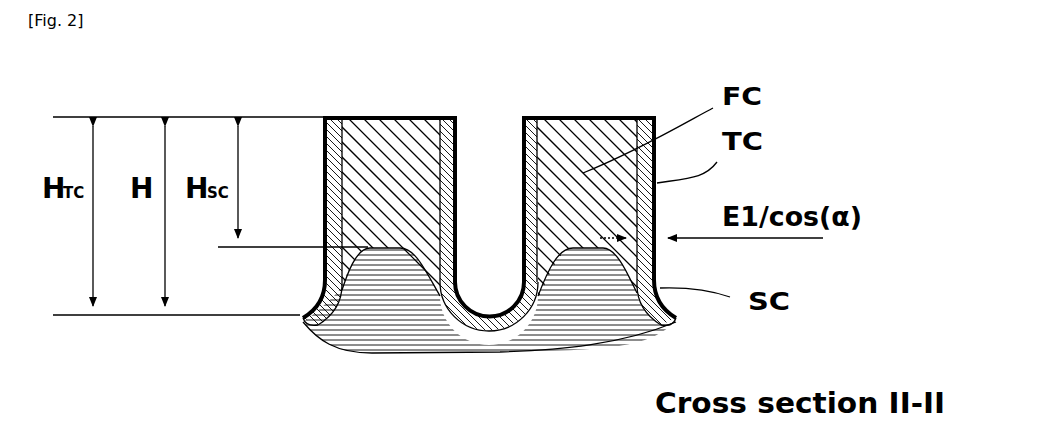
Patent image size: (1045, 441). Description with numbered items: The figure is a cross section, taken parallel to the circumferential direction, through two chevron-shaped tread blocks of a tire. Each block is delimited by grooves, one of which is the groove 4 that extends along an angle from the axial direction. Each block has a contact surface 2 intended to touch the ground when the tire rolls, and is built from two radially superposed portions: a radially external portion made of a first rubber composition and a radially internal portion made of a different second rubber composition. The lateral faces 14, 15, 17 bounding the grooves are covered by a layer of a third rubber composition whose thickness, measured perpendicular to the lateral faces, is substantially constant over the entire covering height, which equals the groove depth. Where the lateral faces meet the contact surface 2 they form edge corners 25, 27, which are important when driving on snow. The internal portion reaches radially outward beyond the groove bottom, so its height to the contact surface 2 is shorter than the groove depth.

The contact surface 2 is at (402, 117).
The groove 4 is at (293, 202).
The lateral face 14 is at (537, 310).
The lateral face 15 is at (323, 213).
The lateral face 17 is at (460, 223).
The edge corner 25 is at (520, 117).
The edge corner 27 is at (657, 117).